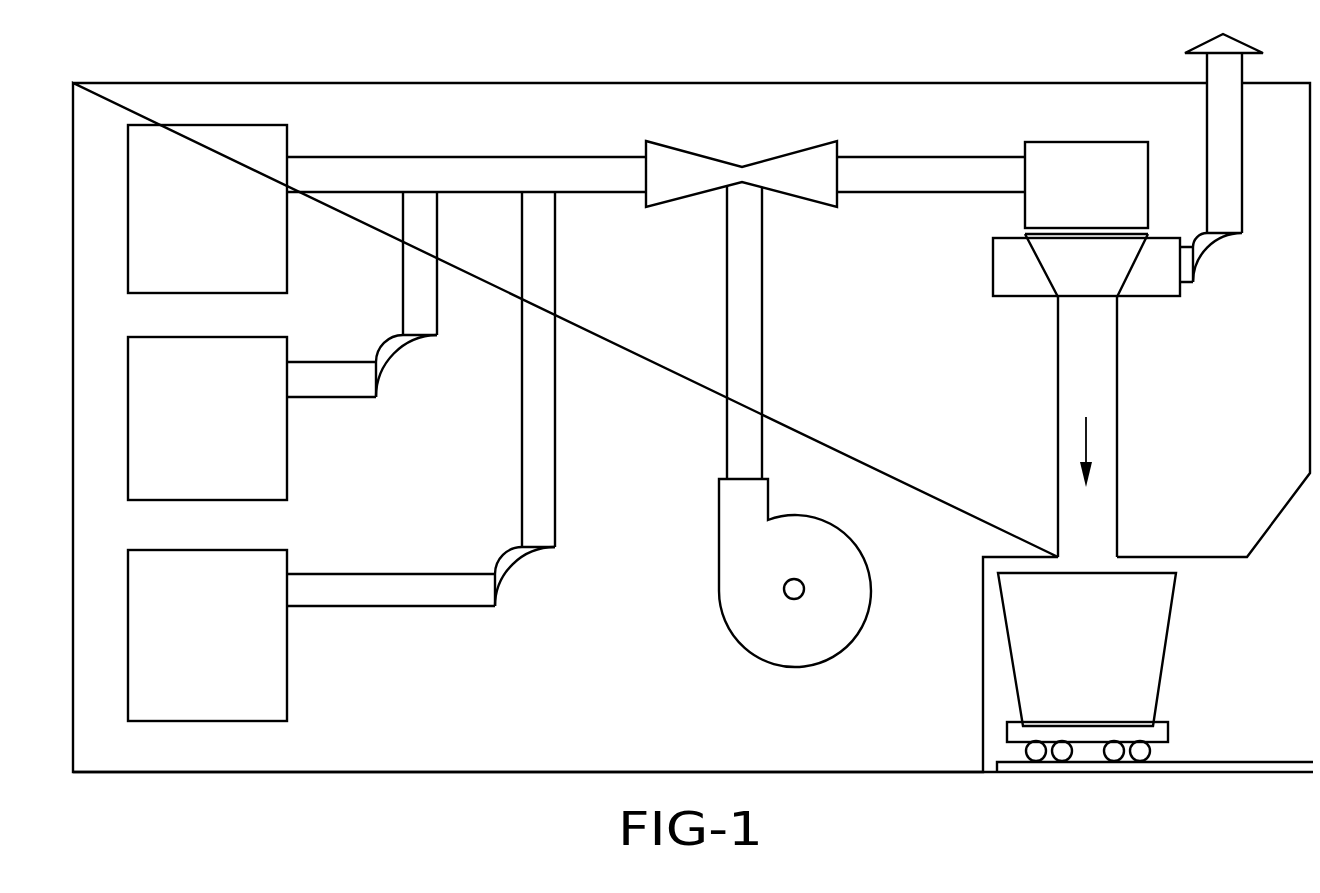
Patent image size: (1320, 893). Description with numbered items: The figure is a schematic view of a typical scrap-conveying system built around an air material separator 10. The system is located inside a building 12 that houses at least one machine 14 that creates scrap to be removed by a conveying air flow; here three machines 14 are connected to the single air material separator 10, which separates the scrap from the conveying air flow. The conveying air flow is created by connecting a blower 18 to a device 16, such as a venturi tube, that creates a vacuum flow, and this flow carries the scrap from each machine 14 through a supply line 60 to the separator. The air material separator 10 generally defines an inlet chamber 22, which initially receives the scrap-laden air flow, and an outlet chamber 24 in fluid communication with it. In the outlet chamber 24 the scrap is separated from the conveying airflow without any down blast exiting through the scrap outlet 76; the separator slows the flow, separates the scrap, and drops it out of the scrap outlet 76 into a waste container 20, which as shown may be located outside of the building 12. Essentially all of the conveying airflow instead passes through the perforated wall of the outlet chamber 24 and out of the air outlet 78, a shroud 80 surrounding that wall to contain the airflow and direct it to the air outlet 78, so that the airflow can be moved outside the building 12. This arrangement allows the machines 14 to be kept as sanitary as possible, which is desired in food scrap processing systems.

The air material separator 10 is at (963, 263).
The building 12 is at (428, 134).
The machine 14 is at (224, 229).
The device 16 is at (686, 210).
The blower 18 is at (852, 525).
The waste container 20 is at (1073, 660).
The inlet chamber 22 is at (1068, 150).
The outlet chamber 24 is at (1035, 300).
The supply line 60 is at (937, 165).
The scrap outlet 76 is at (1080, 393).
The air outlet 78 is at (1226, 264).
The shroud 80 is at (1013, 295).